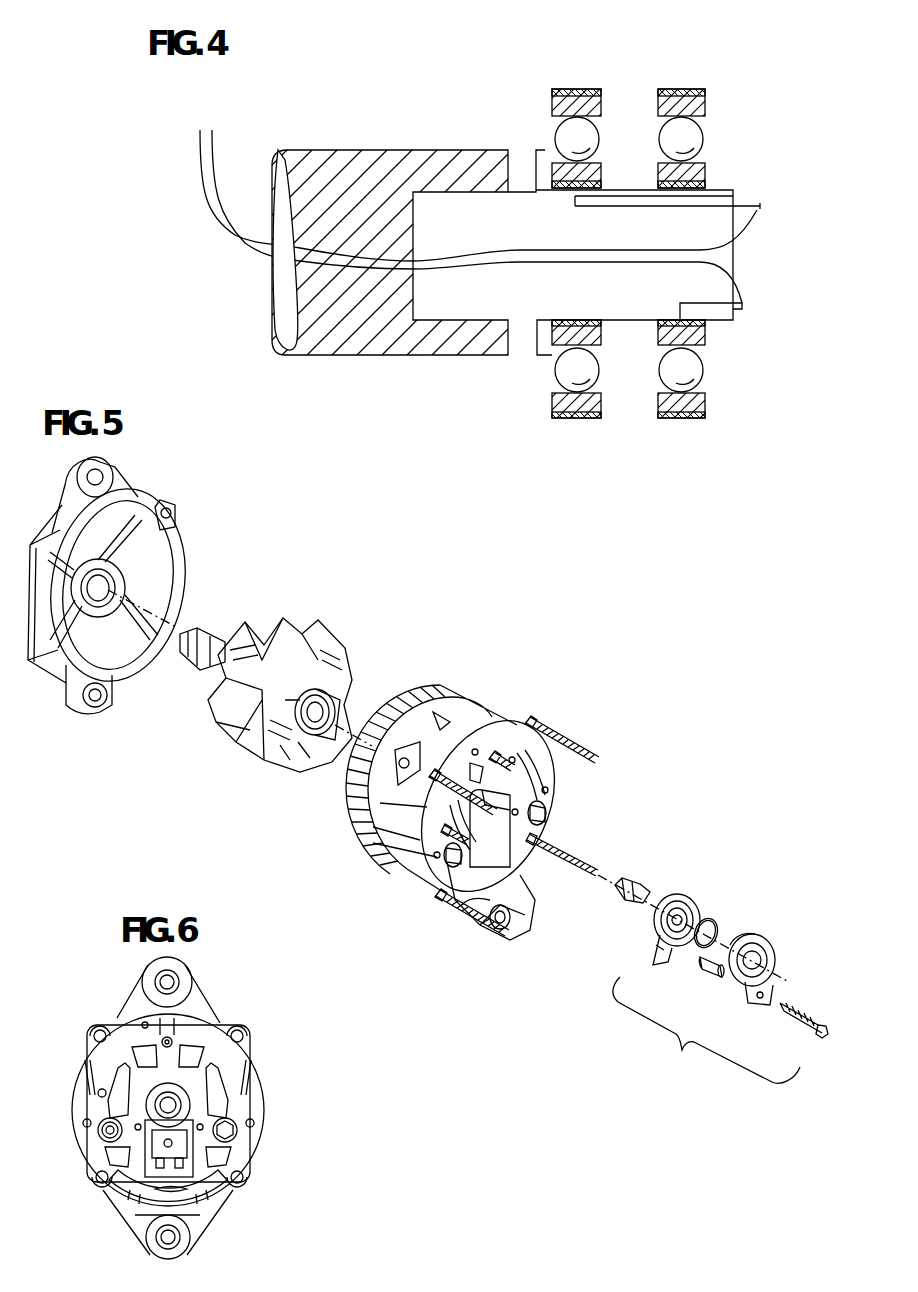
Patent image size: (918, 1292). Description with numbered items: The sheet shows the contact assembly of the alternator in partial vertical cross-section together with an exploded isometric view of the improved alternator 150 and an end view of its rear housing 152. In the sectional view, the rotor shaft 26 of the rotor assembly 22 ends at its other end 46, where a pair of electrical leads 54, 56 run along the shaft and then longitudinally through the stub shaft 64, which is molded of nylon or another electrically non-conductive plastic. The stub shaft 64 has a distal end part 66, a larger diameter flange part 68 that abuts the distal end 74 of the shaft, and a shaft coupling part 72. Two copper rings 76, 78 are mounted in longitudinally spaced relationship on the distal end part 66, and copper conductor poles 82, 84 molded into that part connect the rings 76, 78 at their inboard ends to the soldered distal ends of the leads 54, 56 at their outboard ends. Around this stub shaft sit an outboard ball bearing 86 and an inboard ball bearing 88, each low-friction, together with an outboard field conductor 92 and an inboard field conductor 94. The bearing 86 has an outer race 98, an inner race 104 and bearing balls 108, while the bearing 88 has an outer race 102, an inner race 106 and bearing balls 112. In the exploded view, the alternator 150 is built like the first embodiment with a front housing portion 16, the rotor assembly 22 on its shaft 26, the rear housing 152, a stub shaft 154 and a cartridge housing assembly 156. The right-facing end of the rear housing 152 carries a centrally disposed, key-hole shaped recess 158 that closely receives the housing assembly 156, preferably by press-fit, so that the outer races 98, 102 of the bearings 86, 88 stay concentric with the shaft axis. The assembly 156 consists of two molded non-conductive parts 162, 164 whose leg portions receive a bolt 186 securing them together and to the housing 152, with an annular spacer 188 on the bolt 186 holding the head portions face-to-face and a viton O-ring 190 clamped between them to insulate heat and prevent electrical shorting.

In FIG. 5, the front housing portion 16 is at (166, 498).
In FIG. 5, the rotor assembly 22 is at (327, 640).
In FIG. 4, the rotor shaft 26 is at (308, 150).
In FIG. 5, the rotor shaft 26 is at (213, 634).
In FIG. 4, the other end of the shaft 46 is at (345, 356).
In FIG. 5, the other end of the shaft 46 is at (258, 755).
In FIG. 4, the electrical lead 54 is at (263, 258).
In FIG. 4, the electrical lead 56 is at (258, 255).
In FIG. 4, the stub shaft 64 is at (448, 188).
In FIG. 4, the distal end part 66 is at (628, 323).
In FIG. 4, the flange part 68 is at (521, 158).
In FIG. 4, the shaft coupling part 72 is at (448, 313).
In FIG. 4, the distal end 74 is at (738, 252).
In FIG. 4, the ring 76 is at (666, 312).
In FIG. 4, the ring 78 is at (617, 323).
In FIG. 4, the conductor pole 82 is at (744, 200).
In FIG. 4, the conductor pole 84 is at (737, 312).
In FIG. 4, the outboard ball bearing 86 is at (707, 133).
In FIG. 4, the inboard ball bearing 88 is at (546, 129).
In FIG. 4, the outboard field conductor 92 is at (682, 87).
In FIG. 4, the inboard field conductor 94 is at (578, 88).
In FIG. 4, the outer race 98 is at (706, 107).
In FIG. 4, the outer race 102 is at (550, 106).
In FIG. 4, the inner race 104 is at (706, 170).
In FIG. 4, the inner race 106 is at (546, 346).
In FIG. 4, the bearing balls 108 is at (706, 143).
In FIG. 4, the bearing balls 112 is at (600, 134).
In FIG. 5, the improved alternator 150 is at (390, 544).
In FIG. 5, the rear housing 152 is at (467, 691).
In FIG. 6, the rear housing 152 is at (119, 1020).
In FIG. 5, the stub shaft 154 is at (637, 880).
In FIG. 5, the cartridge housing assembly 156 is at (706, 1030).
In FIG. 5, the key-hole shaped recess 158 is at (458, 855).
In FIG. 6, the key-hole shaped recess 158 is at (177, 1132).
In FIG. 5, the cartridge housing part 162 is at (684, 896).
In FIG. 5, the cartridge housing part 164 is at (777, 945).
In FIG. 6, the cartridge housing part 164 is at (178, 1135).
In FIG. 5, the bolt 186 is at (801, 1011).
In FIG. 5, the annular spacer 188 is at (708, 975).
In FIG. 5, the O-ring 190 is at (715, 918).